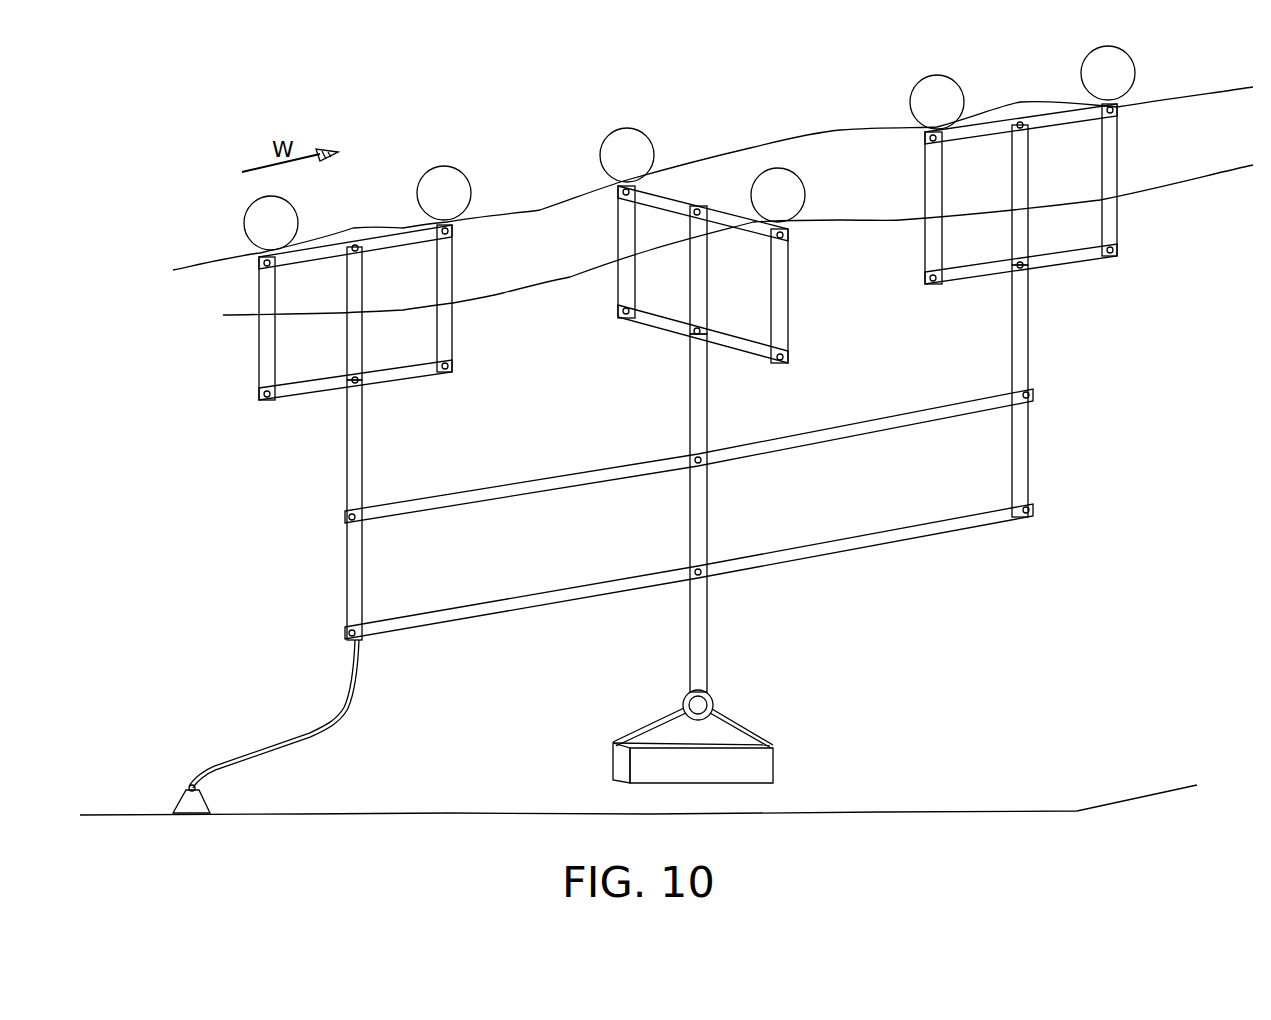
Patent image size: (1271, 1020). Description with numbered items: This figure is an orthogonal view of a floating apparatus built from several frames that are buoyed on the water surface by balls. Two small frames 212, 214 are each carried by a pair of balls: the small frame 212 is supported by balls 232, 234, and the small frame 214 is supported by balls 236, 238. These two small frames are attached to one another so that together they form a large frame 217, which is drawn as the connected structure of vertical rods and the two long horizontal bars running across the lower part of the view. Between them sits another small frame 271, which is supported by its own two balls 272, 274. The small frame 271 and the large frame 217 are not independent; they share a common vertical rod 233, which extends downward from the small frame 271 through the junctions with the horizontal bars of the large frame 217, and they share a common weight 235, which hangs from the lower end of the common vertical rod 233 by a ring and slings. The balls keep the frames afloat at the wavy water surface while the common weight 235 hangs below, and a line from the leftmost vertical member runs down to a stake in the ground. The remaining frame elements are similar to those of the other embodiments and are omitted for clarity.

The small frame 212 is at (259, 358).
The small frame 214 is at (1110, 165).
The large frame 217 is at (1042, 358).
The ball 232 is at (256, 226).
The common vertical rod 233 is at (708, 422).
The ball 234 is at (460, 191).
The common weight 235 is at (776, 762).
The ball 236 is at (918, 100).
The ball 238 is at (1122, 73).
The small frame 271 is at (800, 318).
The ball 272 is at (612, 155).
The ball 274 is at (788, 197).